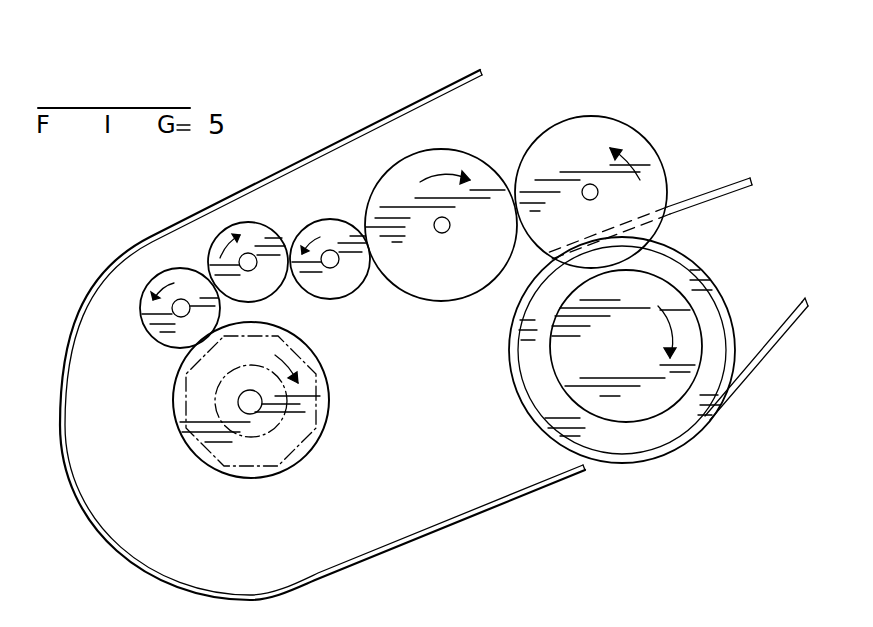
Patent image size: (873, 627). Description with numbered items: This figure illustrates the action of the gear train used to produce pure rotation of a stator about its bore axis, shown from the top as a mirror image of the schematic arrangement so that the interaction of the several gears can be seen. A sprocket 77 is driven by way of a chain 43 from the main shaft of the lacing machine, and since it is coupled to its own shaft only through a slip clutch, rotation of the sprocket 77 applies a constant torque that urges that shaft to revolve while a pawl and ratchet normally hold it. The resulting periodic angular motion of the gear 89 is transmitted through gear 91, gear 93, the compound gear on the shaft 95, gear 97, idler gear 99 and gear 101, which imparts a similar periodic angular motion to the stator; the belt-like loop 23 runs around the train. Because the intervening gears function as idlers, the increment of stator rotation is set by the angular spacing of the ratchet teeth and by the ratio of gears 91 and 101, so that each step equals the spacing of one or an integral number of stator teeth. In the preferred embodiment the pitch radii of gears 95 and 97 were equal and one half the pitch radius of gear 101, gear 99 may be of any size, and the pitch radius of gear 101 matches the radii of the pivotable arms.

The endless belt 23 is at (107, 437).
The chain 43 is at (758, 360).
The sprocket 77 is at (650, 432).
The gear 89 is at (575, 353).
The gear 91 is at (557, 137).
The gear 93 is at (448, 162).
The compound gear 95 is at (328, 227).
The gear 97 is at (253, 232).
The idler gear 99 is at (173, 337).
The gear 101 is at (262, 473).